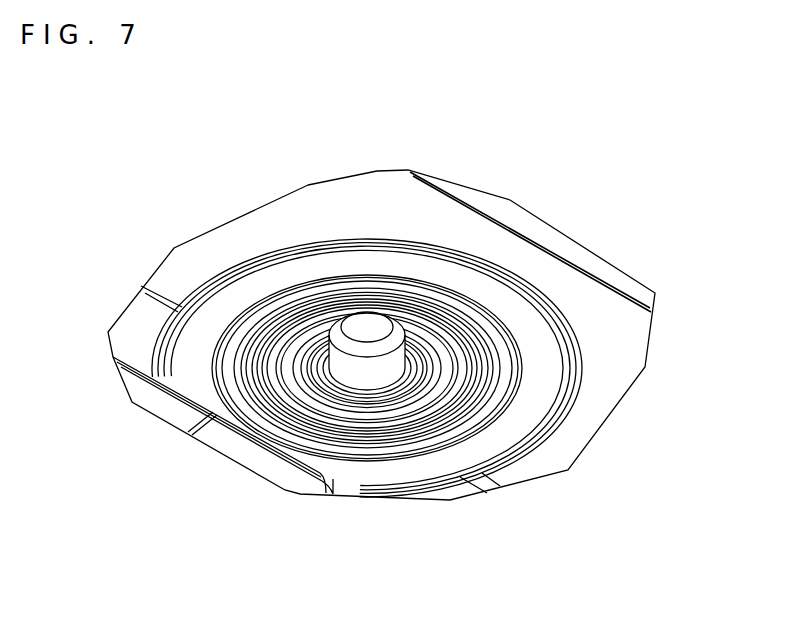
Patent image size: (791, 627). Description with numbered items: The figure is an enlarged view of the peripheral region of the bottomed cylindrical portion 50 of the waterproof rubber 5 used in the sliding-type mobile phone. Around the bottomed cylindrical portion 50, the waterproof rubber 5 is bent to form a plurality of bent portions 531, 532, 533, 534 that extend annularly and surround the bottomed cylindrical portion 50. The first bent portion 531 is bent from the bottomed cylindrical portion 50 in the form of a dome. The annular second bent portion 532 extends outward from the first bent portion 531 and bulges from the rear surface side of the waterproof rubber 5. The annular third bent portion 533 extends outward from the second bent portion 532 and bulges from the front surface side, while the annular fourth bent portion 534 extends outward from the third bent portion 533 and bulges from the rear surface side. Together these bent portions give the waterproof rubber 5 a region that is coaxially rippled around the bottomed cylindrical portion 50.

The waterproof rubber 5 is at (280, 213).
The bottomed cylindrical portion 50 is at (365, 328).
The first bent portion 531 is at (387, 393).
The second bent portion 532 is at (432, 360).
The third bent portion 533 is at (458, 377).
The fourth bent portion 534 is at (483, 403).